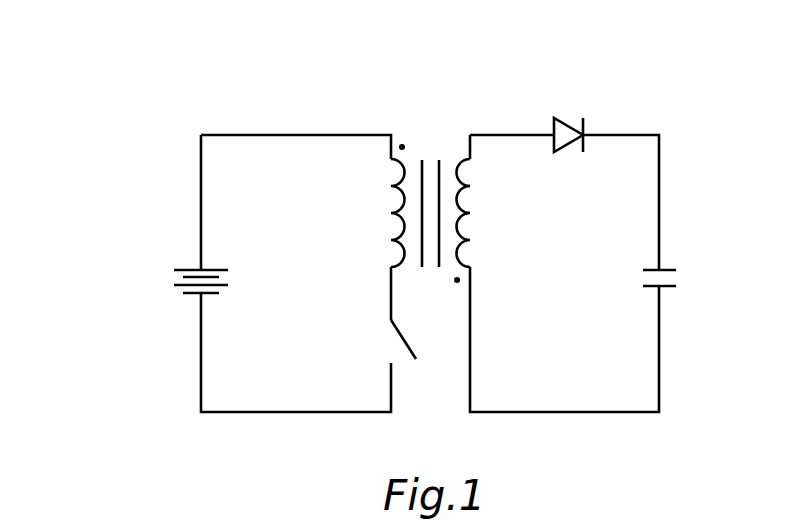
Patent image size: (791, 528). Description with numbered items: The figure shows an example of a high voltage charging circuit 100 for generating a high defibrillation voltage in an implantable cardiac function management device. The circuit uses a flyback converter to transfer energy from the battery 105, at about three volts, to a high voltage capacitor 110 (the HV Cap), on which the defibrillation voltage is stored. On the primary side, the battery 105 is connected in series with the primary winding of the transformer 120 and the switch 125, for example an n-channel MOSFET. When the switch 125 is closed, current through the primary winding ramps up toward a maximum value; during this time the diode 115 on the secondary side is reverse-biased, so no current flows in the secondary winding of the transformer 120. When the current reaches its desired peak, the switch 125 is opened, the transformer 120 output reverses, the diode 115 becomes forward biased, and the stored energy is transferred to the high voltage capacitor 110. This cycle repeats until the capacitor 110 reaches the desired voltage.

The high voltage charging circuit 100 is at (158, 57).
The battery 105 is at (183, 263).
The high voltage capacitor 110 is at (653, 267).
The diode 115 is at (555, 117).
The transformer 120 is at (439, 159).
The switch 125 is at (409, 340).